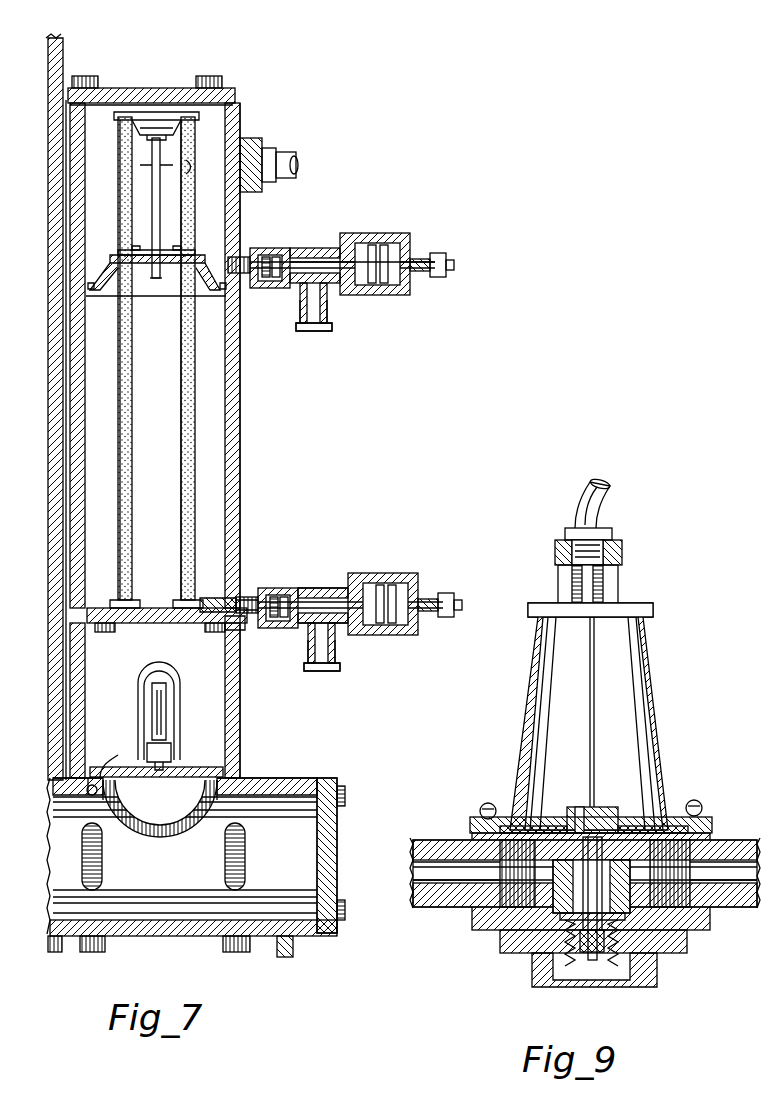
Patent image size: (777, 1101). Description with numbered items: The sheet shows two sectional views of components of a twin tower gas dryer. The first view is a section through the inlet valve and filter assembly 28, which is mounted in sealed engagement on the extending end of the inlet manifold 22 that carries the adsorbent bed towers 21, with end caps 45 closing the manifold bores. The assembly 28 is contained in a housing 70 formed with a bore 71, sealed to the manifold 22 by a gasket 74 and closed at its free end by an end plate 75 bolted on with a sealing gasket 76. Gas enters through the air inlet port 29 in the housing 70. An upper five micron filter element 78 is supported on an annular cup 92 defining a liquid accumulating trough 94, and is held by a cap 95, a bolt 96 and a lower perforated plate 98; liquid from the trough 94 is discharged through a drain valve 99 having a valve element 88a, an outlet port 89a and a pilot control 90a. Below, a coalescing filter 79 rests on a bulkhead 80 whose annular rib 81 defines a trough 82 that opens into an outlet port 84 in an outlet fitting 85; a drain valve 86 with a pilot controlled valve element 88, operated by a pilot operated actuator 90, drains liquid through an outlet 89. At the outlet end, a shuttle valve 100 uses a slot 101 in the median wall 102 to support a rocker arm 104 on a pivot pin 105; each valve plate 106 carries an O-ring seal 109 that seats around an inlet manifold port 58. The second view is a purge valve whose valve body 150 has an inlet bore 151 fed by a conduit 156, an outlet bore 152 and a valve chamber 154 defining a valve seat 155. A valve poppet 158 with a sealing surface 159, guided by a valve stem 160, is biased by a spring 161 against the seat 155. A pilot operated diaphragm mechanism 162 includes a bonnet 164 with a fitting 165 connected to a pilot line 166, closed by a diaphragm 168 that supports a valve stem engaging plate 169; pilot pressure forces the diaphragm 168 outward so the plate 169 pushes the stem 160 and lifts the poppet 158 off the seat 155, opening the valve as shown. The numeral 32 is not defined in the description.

In FIG. 7, the adsorbent bed tower 21 is at (66, 58).
In FIG. 7, the inlet manifold 22 is at (309, 780).
In FIG. 7, the inlet valve and filter assembly 28 is at (242, 503).
In FIG. 7, the air inlet port 29 is at (193, 163).
In FIG. 9, the conduit 32 is at (757, 905).
In FIG. 7, the end cap 45 is at (338, 848).
In FIG. 7, the inlet manifold port 58 is at (230, 774).
In FIG. 7, the housing 70 is at (236, 432).
In FIG. 7, the bore 71 is at (235, 392).
In FIG. 7, the gasket 74 is at (92, 796).
In FIG. 7, the end plate 75 is at (125, 96).
In FIG. 7, the sealing gasket 76 is at (93, 106).
In FIG. 7, the five micron filter element 78 is at (160, 160).
In FIG. 7, the coalescing filter 79 is at (192, 460).
In FIG. 7, the bulkhead 80 is at (143, 630).
In FIG. 7, the annular rib 81 is at (118, 600).
In FIG. 7, the trough 82 is at (226, 590).
In FIG. 7, the outlet port 84 is at (234, 630).
In FIG. 7, the outlet fitting 85 is at (266, 596).
In FIG. 7, the drain valve 86 is at (306, 588).
In FIG. 7, the pilot controlled valve element 88 is at (290, 620).
In FIG. 7, the valve element 88a is at (276, 290).
In FIG. 7, the outlet 89 is at (334, 656).
In FIG. 7, the outlet port 89a is at (330, 322).
In FIG. 7, the pilot operated actuator 90 is at (366, 574).
In FIG. 7, the pilot control 90a is at (365, 234).
In FIG. 7, the annular cup 92 is at (205, 258).
In FIG. 7, the liquid accumulating trough 94 is at (215, 284).
In FIG. 7, the cap 95 is at (160, 120).
In FIG. 7, the bolt 96 is at (206, 86).
In FIG. 7, the lower perforated plate 98 is at (160, 280).
In FIG. 7, the drain valve 99 is at (300, 248).
In FIG. 7, the shuttle valve 100 is at (160, 668).
In FIG. 7, the slot 101 is at (178, 692).
In FIG. 7, the median wall 102 is at (244, 740).
In FIG. 7, the rocker arm 104 is at (152, 724).
In FIG. 7, the pivot pin 105 is at (178, 755).
In FIG. 7, the valve plate 106 is at (128, 784).
In FIG. 7, the O-ring seal 109 is at (104, 775).
In FIG. 9, the valve body 150 is at (470, 838).
In FIG. 9, the inlet bore 151 is at (455, 878).
In FIG. 9, the outlet bore 152 is at (705, 828).
In FIG. 9, the valve chamber 154 is at (548, 910).
In FIG. 9, the valve seat 155 is at (666, 950).
In FIG. 9, the conduit 156 is at (420, 888).
In FIG. 9, the valve poppet 158 is at (592, 975).
In FIG. 9, the sealing surface 159 is at (640, 985).
In FIG. 9, the valve stem 160 is at (618, 820).
In FIG. 9, the spring 161 is at (560, 950).
In FIG. 9, the pilot operated diaphragm mechanism 162 is at (548, 792).
In FIG. 9, the bonnet 164 is at (666, 642).
In FIG. 9, the fitting 165 is at (624, 550).
In FIG. 9, the pilot line 166 is at (585, 496).
In FIG. 9, the diaphragm 168 is at (528, 826).
In FIG. 9, the valve stem engaging plate 169 is at (580, 810).